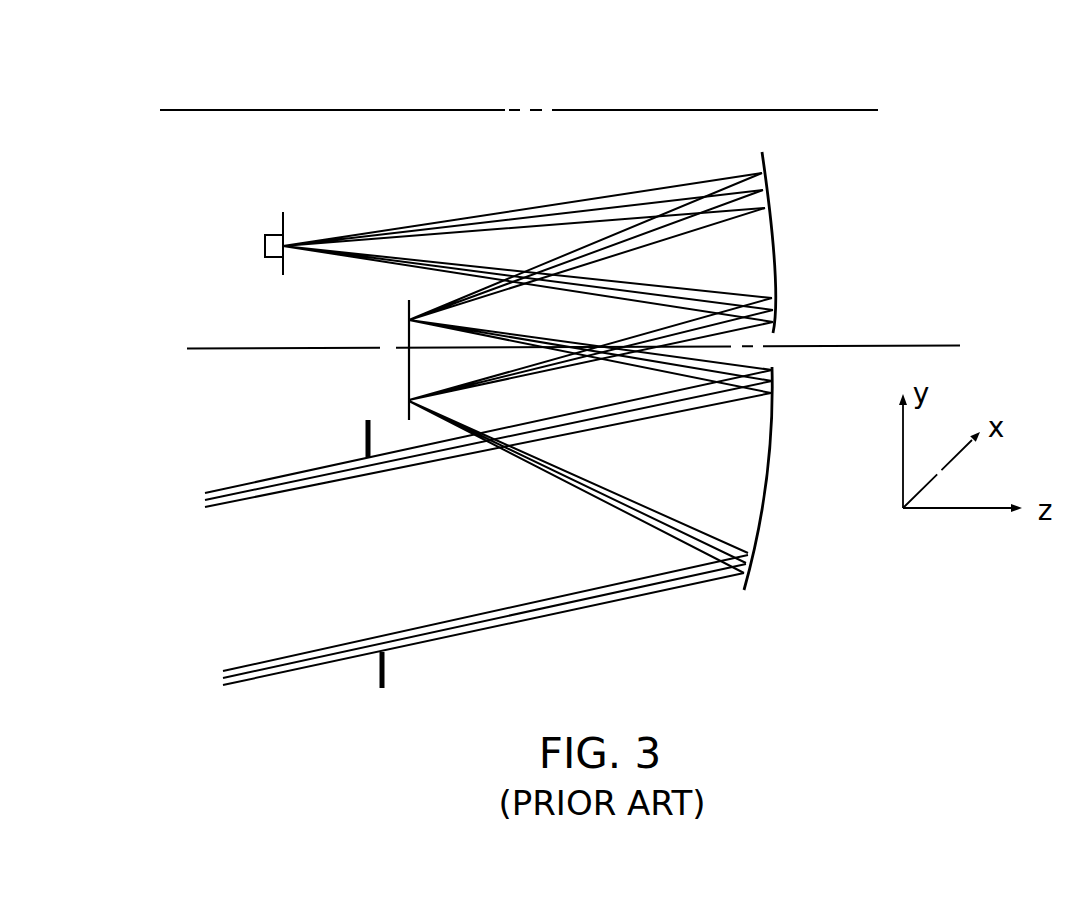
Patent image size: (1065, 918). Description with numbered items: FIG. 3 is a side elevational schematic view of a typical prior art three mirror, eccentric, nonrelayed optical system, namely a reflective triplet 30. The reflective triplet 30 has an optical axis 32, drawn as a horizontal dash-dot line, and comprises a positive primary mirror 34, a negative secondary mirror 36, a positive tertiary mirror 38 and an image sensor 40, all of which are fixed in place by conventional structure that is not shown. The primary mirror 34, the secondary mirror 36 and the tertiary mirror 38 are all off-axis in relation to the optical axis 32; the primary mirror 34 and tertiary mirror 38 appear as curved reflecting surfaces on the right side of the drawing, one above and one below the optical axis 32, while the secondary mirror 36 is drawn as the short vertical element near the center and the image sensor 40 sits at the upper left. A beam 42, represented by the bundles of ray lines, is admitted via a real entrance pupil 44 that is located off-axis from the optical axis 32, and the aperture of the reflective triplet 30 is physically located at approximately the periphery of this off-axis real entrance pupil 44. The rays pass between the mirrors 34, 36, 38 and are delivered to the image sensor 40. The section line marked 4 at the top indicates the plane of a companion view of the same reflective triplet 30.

The section line 4- 4 is at (215, 100).
The reflective triplet 30 is at (958, 160).
The optical axis 32 is at (203, 348).
The positive primary mirror 34 is at (765, 452).
The negative secondary mirror 36 is at (408, 340).
The positive tertiary mirror 38 is at (777, 262).
The image sensor 40 is at (281, 217).
The beam 42 is at (347, 473).
The real entrance pupil 44 is at (386, 672).